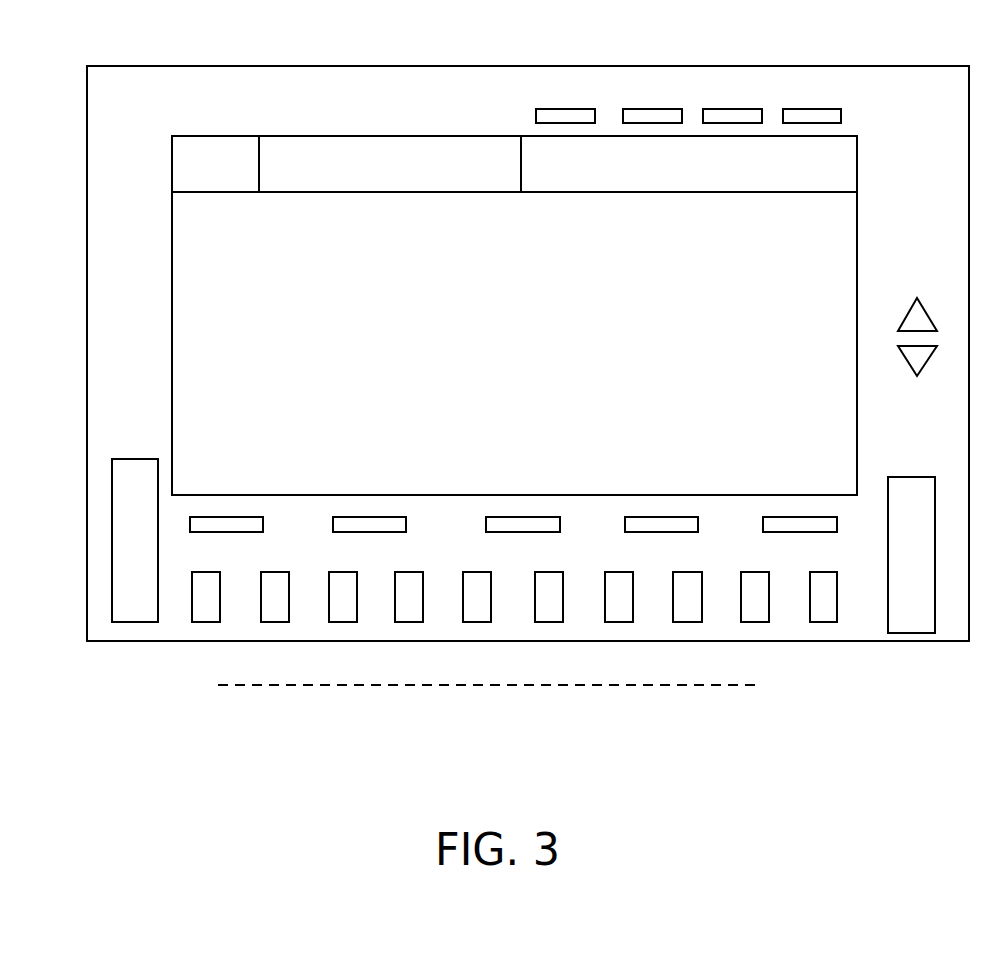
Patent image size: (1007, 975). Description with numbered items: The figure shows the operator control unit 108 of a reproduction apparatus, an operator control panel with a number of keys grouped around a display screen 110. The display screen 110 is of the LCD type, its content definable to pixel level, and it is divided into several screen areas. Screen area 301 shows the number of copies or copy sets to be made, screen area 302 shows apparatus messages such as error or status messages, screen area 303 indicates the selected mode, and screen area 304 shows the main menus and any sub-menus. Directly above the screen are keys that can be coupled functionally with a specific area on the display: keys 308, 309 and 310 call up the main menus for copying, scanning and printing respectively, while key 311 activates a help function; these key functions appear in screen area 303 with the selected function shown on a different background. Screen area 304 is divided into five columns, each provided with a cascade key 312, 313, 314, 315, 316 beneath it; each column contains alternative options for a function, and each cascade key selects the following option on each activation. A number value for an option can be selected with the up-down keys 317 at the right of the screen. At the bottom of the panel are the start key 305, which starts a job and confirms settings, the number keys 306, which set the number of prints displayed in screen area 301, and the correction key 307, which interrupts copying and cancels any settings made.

The operator control unit 108 is at (655, 53).
The display screen 110 is at (857, 243).
The screen area 301 is at (192, 145).
The screen area 302 is at (282, 146).
The screen area 303 is at (606, 180).
The screen area 304 is at (190, 295).
The start key 305 is at (150, 477).
The number keys 306 is at (208, 615).
The correction key 307 is at (927, 493).
The key 308 is at (547, 117).
The key 309 is at (629, 117).
The key 310 is at (708, 117).
The key 311 is at (790, 117).
The cascade key 312 is at (260, 522).
The cascade key 313 is at (399, 522).
The cascade key 314 is at (553, 522).
The cascade key 315 is at (683, 525).
The cascade key 316 is at (831, 525).
The up-down keys 317 is at (922, 317).